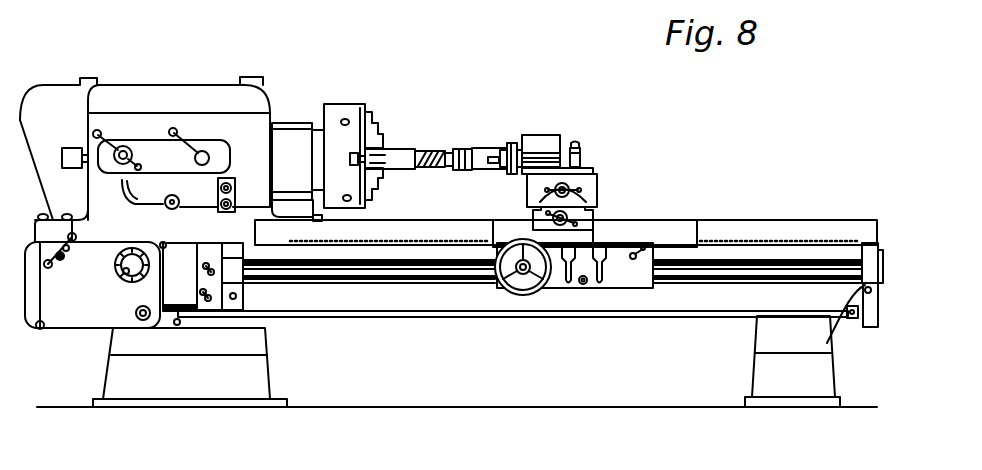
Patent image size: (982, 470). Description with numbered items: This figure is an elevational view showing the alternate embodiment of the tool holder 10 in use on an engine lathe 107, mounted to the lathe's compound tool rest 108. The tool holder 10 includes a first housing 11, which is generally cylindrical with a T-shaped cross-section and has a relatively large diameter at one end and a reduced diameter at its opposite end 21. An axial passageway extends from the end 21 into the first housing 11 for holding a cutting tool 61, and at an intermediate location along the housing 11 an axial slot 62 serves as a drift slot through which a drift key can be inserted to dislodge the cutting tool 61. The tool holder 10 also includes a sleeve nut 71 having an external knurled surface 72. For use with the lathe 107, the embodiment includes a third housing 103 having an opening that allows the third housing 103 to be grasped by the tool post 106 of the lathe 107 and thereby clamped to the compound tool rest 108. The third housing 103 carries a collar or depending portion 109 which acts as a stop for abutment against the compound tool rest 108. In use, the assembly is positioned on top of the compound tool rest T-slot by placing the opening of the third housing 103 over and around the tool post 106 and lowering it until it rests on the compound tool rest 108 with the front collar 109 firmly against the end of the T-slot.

The tool holder 10 is at (462, 171).
The first housing 11 is at (487, 150).
The reduced diameter end 21 is at (458, 150).
The cutting tool 61 is at (438, 167).
The axial slot 62 is at (493, 170).
The sleeve nut 71 is at (514, 144).
The external knurled surface 72 is at (517, 172).
The third housing 103 is at (552, 134).
The tool post 106 is at (581, 153).
The lathe 107 is at (568, 322).
The compound tool rest 108 is at (596, 198).
The collar 109 is at (527, 186).